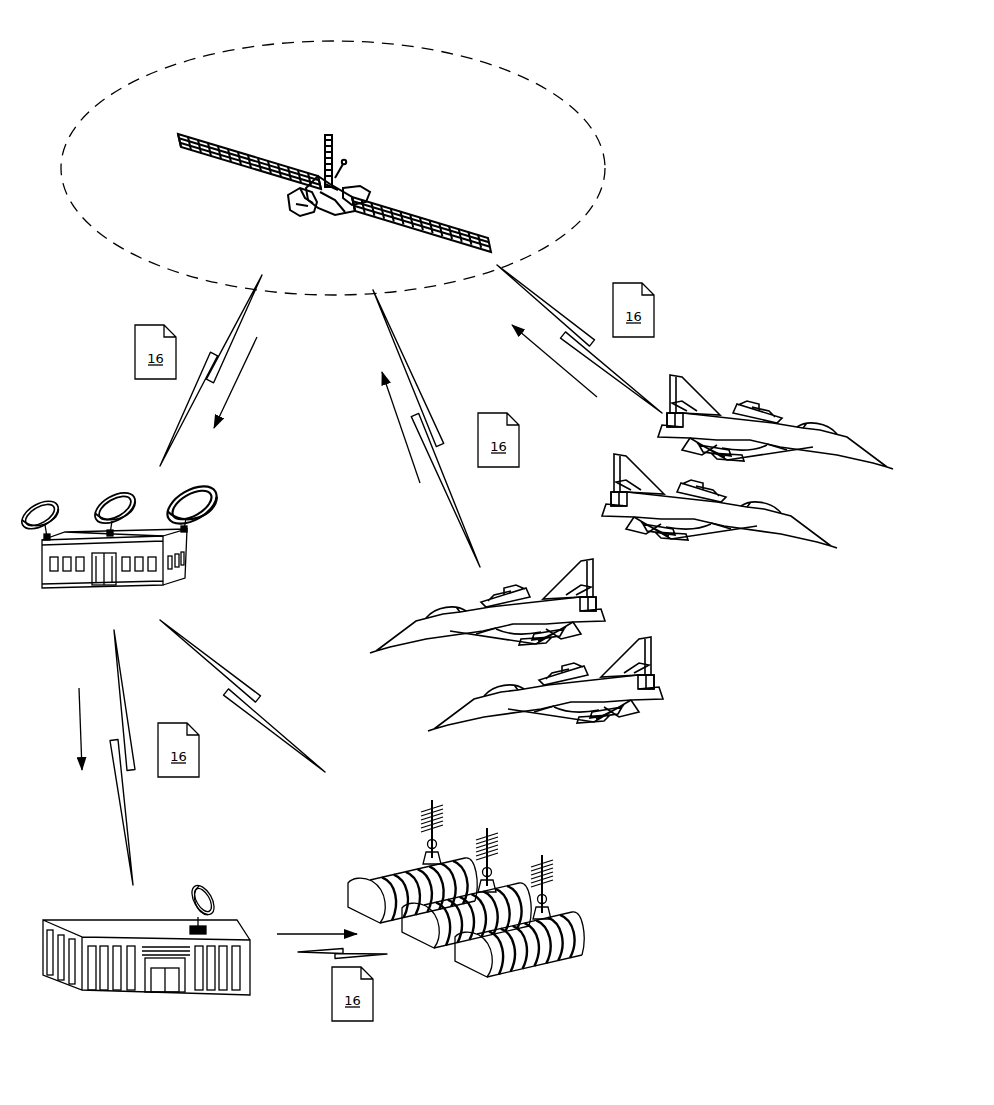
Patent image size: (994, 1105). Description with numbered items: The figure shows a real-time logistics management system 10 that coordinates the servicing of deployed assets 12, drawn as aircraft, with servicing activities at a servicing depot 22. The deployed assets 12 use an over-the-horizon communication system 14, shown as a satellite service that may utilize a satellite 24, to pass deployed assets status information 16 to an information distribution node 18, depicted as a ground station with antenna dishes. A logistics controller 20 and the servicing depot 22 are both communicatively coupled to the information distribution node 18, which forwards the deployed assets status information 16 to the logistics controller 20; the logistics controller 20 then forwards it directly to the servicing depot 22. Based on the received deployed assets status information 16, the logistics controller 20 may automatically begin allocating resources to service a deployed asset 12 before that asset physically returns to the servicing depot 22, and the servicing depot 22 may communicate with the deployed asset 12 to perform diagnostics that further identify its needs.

The real-time logistics management system 10 is at (681, 88).
The deployed assets 12 is at (688, 375).
The over-the-horizon (OTH) communication system 14 is at (111, 69).
The deployed assets status information 16 is at (394, 652).
The information distribution node 18 is at (223, 528).
The logistics controller 20 is at (72, 920).
The servicing depot 22 is at (582, 930).
The satellite 24 is at (366, 190).